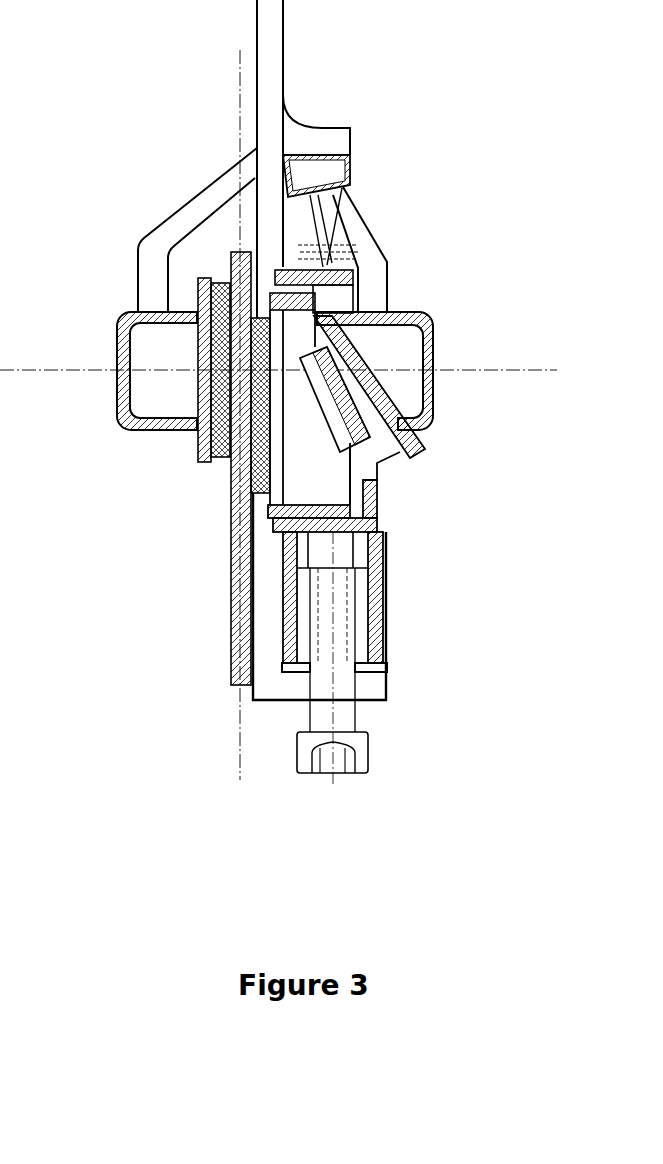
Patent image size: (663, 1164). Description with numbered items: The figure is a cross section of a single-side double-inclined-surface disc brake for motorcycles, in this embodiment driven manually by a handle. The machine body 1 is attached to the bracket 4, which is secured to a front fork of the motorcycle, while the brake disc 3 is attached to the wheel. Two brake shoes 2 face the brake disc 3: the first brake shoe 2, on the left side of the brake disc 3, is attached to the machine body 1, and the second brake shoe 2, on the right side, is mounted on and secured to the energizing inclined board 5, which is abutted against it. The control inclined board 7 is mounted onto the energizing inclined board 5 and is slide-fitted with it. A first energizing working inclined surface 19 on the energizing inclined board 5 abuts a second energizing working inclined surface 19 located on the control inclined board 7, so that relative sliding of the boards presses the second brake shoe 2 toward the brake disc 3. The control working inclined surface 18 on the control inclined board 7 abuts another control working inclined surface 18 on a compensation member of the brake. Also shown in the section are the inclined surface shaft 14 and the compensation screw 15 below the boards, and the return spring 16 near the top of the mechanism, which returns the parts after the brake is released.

The machine body 1 is at (117, 312).
The brake shoe 2 is at (212, 441).
The brake disc 3 is at (233, 485).
The bracket 4 is at (277, 177).
The energizing inclined board 5 is at (378, 496).
The control inclined board 7 is at (395, 441).
The inclined surface shaft 14 is at (385, 622).
The compensation screw 15 is at (357, 758).
The return spring 16 is at (332, 240).
The control working inclined surface 18 is at (415, 410).
The energizing working inclined surface 19 is at (405, 372).